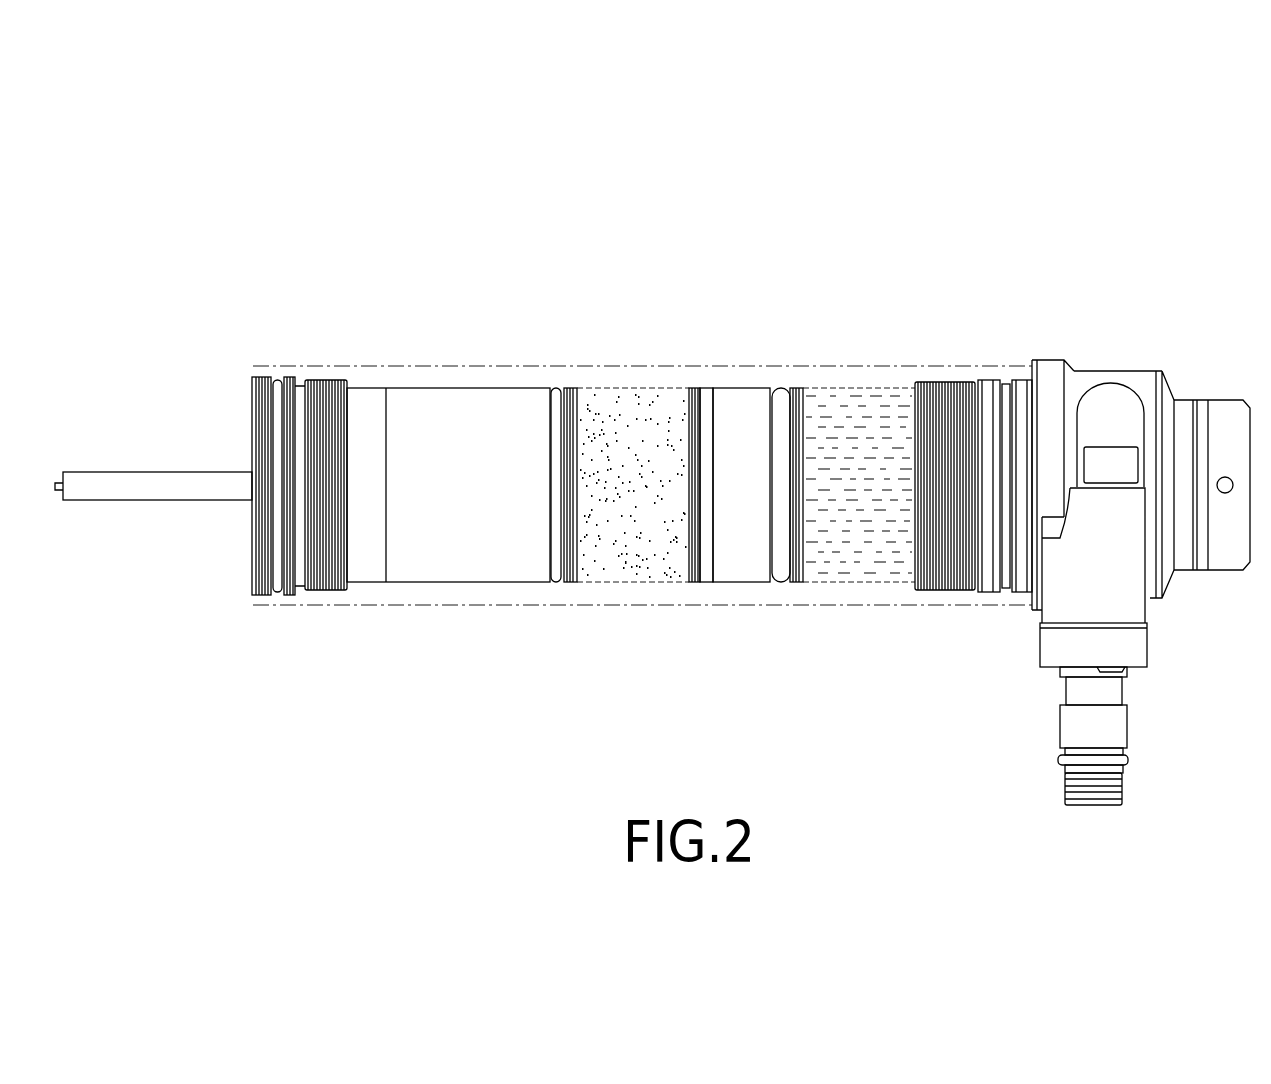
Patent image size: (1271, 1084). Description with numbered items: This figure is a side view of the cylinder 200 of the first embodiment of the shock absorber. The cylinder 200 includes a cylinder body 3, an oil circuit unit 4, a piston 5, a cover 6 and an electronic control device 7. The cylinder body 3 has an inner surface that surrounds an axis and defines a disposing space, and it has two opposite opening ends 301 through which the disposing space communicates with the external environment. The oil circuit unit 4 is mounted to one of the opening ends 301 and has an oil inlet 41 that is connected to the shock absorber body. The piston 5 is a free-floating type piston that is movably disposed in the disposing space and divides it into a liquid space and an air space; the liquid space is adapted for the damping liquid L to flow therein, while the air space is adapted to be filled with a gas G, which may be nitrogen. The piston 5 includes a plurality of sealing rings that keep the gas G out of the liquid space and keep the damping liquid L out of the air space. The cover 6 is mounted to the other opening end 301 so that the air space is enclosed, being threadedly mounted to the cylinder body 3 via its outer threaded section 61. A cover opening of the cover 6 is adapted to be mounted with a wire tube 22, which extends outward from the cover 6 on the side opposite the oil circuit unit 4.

The cylinder 200 is at (902, 235).
The cylinder body 3 is at (458, 366).
The opening ends 301 is at (253, 366).
The wire tube 22 is at (152, 470).
The cover 6 is at (290, 592).
The outer threaded section 61 is at (337, 593).
The electronic control device 7 is at (433, 570).
The gas G is at (623, 420).
The piston 5 is at (747, 407).
The damping liquid L is at (843, 408).
The oil circuit unit 4 is at (1148, 647).
The oil inlet 41 is at (1095, 805).